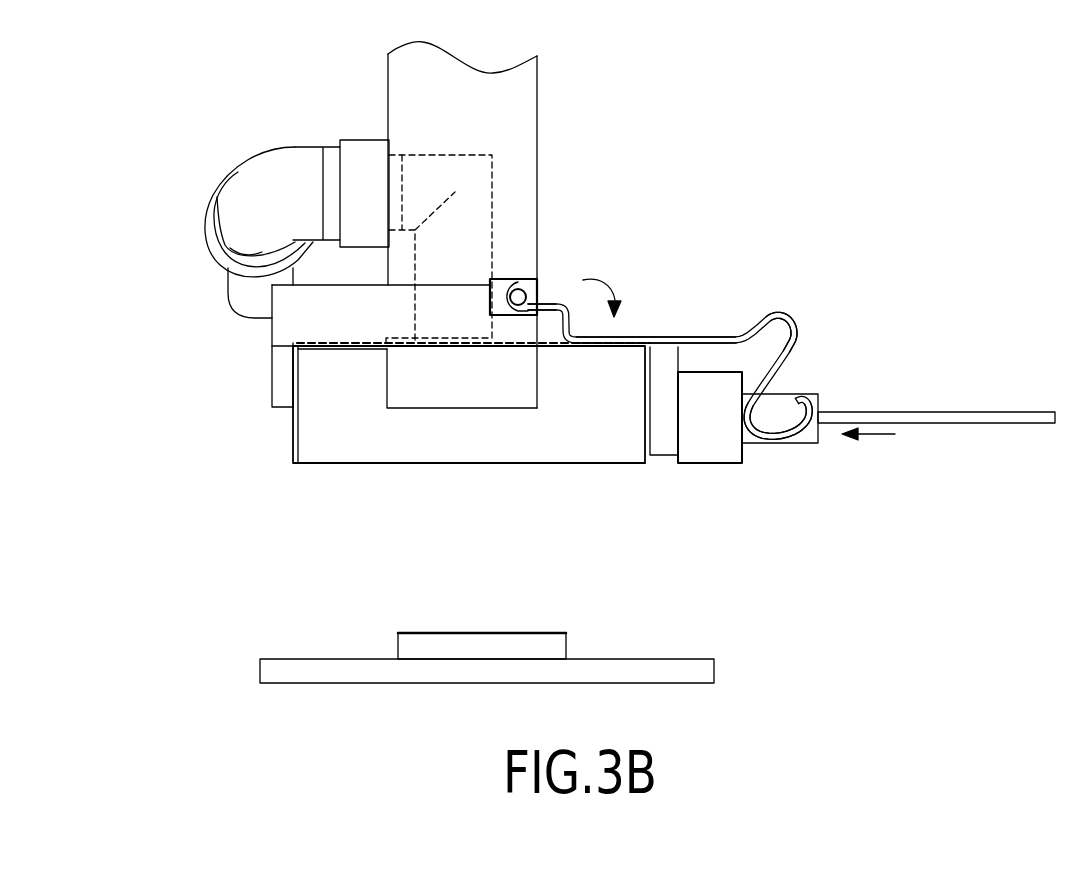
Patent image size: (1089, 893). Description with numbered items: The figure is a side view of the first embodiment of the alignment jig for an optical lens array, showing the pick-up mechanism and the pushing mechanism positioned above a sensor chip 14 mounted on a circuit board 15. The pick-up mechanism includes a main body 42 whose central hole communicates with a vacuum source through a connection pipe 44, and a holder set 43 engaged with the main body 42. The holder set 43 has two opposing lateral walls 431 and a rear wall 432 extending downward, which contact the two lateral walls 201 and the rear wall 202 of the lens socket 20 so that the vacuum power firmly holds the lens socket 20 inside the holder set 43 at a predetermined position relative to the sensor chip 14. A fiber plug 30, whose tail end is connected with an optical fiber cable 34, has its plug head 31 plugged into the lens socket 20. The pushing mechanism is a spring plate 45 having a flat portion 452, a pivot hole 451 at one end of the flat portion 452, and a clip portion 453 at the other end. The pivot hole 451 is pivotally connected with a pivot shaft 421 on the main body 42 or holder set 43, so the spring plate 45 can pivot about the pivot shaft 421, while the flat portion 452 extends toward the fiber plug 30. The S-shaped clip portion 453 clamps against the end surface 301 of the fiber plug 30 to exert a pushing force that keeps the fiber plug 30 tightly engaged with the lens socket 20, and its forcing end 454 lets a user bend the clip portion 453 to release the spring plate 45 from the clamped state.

The main body 42 is at (532, 105).
The pivot shaft 421 is at (530, 297).
The connection pipe 44 is at (262, 183).
The holder set 43 is at (401, 372).
The rear wall 432 is at (278, 383).
The lateral walls 431 is at (458, 392).
The lens socket 20 is at (425, 454).
The lateral walls 201 is at (408, 437).
The rear wall 202 is at (292, 422).
The spring plate 45 is at (716, 326).
The pivot hole 451 is at (522, 292).
The flat portion 452 is at (645, 338).
The clip portion 453 is at (787, 356).
The forcing end 454 is at (753, 413).
The plug head 31 is at (667, 450).
The fiber plug 30 is at (708, 455).
The end surface 301 is at (742, 455).
The optical fiber cable 34 is at (935, 418).
The sensor chip 14 is at (558, 640).
The circuit board 15 is at (697, 666).